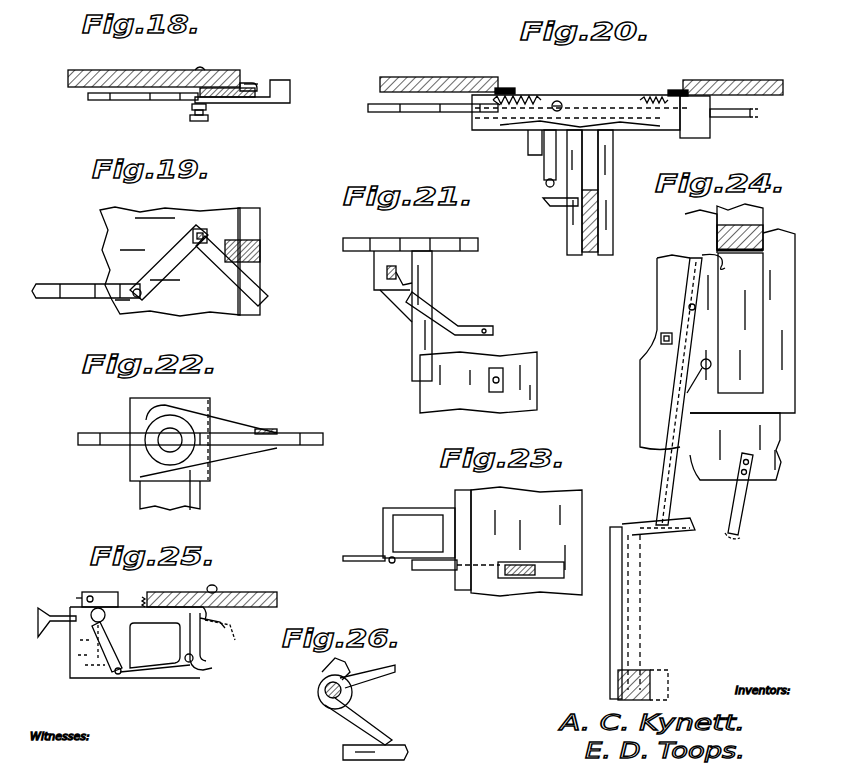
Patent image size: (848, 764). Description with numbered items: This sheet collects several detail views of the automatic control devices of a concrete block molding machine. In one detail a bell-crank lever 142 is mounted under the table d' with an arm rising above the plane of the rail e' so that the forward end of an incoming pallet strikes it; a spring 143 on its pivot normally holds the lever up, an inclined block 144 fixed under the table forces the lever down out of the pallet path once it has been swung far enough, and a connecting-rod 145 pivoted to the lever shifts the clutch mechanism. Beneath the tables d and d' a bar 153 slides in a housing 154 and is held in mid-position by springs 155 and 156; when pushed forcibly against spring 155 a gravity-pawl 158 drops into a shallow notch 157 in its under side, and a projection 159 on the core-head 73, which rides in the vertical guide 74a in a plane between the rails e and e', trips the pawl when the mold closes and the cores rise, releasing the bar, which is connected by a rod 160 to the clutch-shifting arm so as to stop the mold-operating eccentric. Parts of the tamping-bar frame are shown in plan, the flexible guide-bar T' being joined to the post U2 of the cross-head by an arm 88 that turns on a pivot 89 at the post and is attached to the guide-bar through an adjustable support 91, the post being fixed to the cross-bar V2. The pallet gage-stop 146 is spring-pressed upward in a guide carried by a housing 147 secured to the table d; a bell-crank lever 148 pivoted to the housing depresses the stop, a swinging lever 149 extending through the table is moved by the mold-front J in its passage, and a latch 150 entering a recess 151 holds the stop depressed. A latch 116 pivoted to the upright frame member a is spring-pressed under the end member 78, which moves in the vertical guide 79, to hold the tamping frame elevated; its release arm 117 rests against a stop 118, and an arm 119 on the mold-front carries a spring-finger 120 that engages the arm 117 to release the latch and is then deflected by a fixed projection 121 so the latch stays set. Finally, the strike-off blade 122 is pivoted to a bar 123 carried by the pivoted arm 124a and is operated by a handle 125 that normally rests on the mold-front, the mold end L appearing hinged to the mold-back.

In FIG. 18, the connecting-rod 145 is at (103, 100).
In FIG. 19, the connecting-rod 145 is at (57, 300).
In FIG. 18, the spring 143 is at (197, 108).
In FIG. 18, the inclined block 144 is at (236, 98).
In FIG. 19, the inclined block 144 is at (262, 255).
In FIG. 18, the bell-crank lever 142 is at (268, 103).
In FIG. 19, the bell-crank lever 142 is at (265, 293).
In FIG. 20, the rod 160 is at (382, 112).
In FIG. 20, the spring 155 is at (520, 98).
In FIG. 20, the shallow notch 157 is at (557, 101).
In FIG. 20, the bar 153 is at (598, 97).
In FIG. 21, the bar 153 is at (416, 272).
In FIG. 20, the spring 156 is at (665, 98).
In FIG. 20, the housing 154 is at (690, 134).
In FIG. 20, the gravity-pawl 158 is at (543, 165).
In FIG. 21, the gravity-pawl 158 is at (438, 313).
In FIG. 20, the projection 159 is at (548, 204).
In FIG. 21, the projection 159 is at (497, 368).
In FIG. 20, the vertical guide 74a is at (605, 175).
In FIG. 21, the vertical guide 74a is at (412, 358).
In FIG. 20, the core-head 73 is at (588, 252).
In FIG. 21, the core-head 73 is at (420, 396).
In FIG. 22, the arm 88 is at (220, 425).
In FIG. 22, the pivot 89 is at (170, 450).
In FIG. 22, the support 91 is at (272, 432).
In FIG. 25, the gage-stop 146 is at (100, 594).
In FIG. 23, the gage-stop 146 is at (405, 520).
In FIG. 25, the housing 147 is at (103, 672).
In FIG. 23, the housing 147 is at (383, 515).
In FIG. 25, the bell-crank lever 148 is at (158, 666).
In FIG. 23, the bell-crank lever 148 is at (448, 572).
In FIG. 25, the swinging lever 149 is at (205, 630).
In FIG. 23, the swinging lever 149 is at (520, 578).
In FIG. 25, the latch 150 is at (60, 622).
In FIG. 23, the latch 150 is at (365, 562).
In FIG. 25, the recess 151 is at (82, 596).
In FIG. 24, the upright end member 78 is at (763, 216).
In FIG. 24, the vertical guide 79 is at (690, 237).
In FIG. 24, the latch 116 is at (724, 266).
In FIG. 24, the arm 117 is at (698, 473).
In FIG. 24, the stop 118 is at (660, 344).
In FIG. 24, the arm 119 is at (612, 635).
In FIG. 24, the spring-finger 120 is at (652, 520).
In FIG. 24, the fixed projection 121 is at (712, 538).
In FIG. 26, the strike-off blade 122 is at (370, 735).
In FIG. 26, the bar 123 is at (315, 692).
In FIG. 26, the arm 124a is at (322, 672).
In FIG. 26, the handle 125 is at (400, 676).
In FIG. 18, the table d' is at (154, 66).
In FIG. 19, the table d' is at (152, 261).
In FIG. 20, the table d' is at (439, 67).
In FIG. 21, the table d' is at (410, 234).
In FIG. 18, the rail e' is at (257, 64).
In FIG. 19, the rail e' is at (264, 261).
In FIG. 20, the rail e' is at (512, 72).
In FIG. 25, the table d is at (212, 586).
In FIG. 20, the table d is at (733, 69).
In FIG. 23, the table d is at (526, 532).
In FIG. 25, the rail e is at (137, 589).
In FIG. 20, the rail e is at (673, 73).
In FIG. 23, the rail e is at (449, 530).
In FIG. 22, the guide-bar T' is at (200, 425).
In FIG. 22, the post U2 is at (135, 465).
In FIG. 22, the cross-bar V2 is at (201, 497).
In FIG. 24, the upright frame member a is at (656, 318).
In FIG. 24, the mold-front J is at (650, 672).
In FIG. 26, the mold end L is at (343, 750).